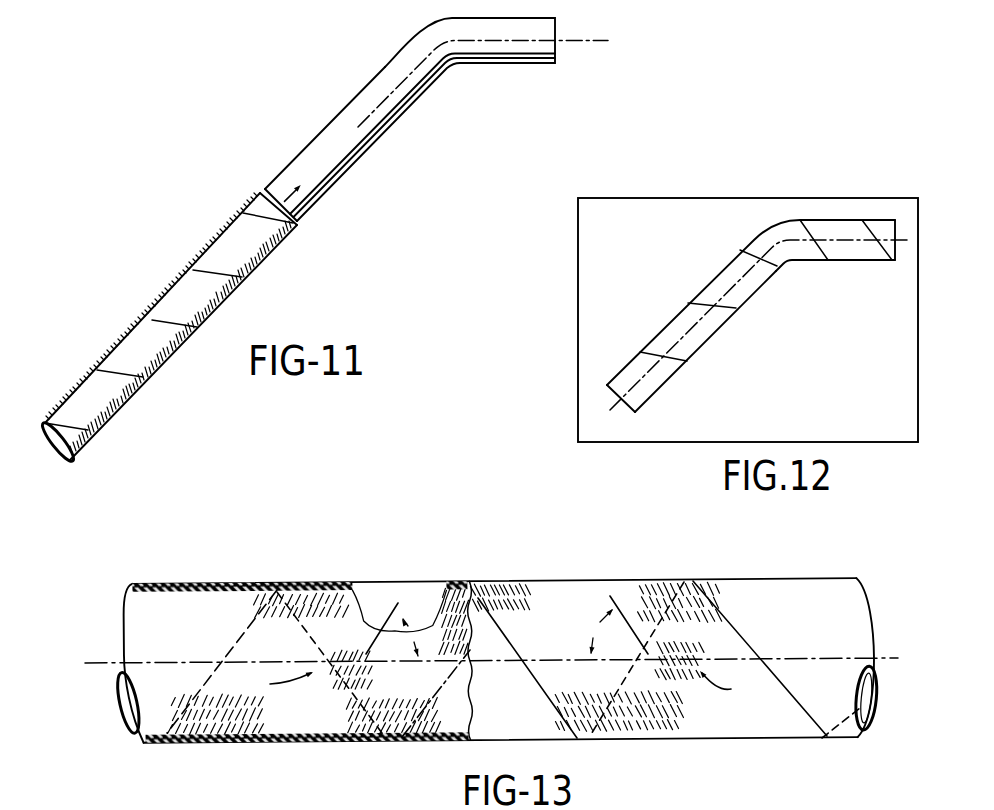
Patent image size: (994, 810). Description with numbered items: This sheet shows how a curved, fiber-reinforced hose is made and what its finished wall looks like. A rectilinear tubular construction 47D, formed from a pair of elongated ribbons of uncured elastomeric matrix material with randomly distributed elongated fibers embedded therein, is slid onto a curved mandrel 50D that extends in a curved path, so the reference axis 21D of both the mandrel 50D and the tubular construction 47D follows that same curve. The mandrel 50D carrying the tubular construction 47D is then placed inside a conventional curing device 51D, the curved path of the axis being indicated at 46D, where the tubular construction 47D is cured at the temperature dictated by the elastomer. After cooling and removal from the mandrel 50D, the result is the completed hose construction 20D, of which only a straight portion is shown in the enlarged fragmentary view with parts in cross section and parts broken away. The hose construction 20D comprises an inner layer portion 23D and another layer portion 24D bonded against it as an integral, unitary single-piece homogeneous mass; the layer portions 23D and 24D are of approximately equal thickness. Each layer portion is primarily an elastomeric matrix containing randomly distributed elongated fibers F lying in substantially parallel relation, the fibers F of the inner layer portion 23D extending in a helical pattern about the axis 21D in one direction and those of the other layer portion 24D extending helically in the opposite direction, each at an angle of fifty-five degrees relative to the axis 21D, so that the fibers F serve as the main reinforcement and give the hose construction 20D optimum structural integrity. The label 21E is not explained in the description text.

In FIG. 12, the hose construction 20D is at (727, 329).
In FIG. 13, the hose construction 20D is at (466, 550).
In FIG. 11, the reference axis 21D is at (587, 41).
In FIG. 12, the reference axis 21D is at (672, 345).
In FIG. 13, the reference axis 21D is at (882, 657).
In FIG. 13, the axis of adjacent tube section 21E is at (896, 789).
In FIG. 13, the inner layer portion 23D is at (323, 715).
In FIG. 13, the other layer portion 24D is at (416, 742).
In FIG. 12, the curved path of reference axis 46D is at (792, 271).
In FIG. 11, the tubular construction 47D is at (165, 295).
In FIG. 11, the curved mandrel 50D is at (345, 108).
In FIG. 12, the curing device 51D is at (652, 203).
In FIG. 13, the elongated fibers F is at (501, 686).